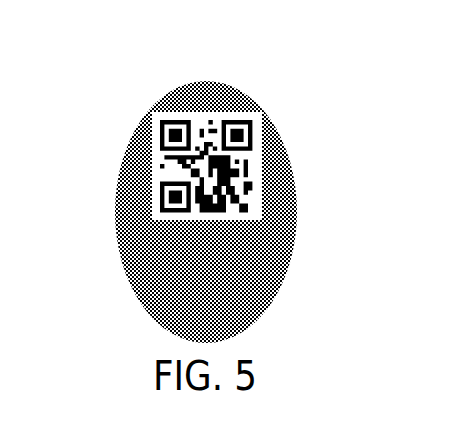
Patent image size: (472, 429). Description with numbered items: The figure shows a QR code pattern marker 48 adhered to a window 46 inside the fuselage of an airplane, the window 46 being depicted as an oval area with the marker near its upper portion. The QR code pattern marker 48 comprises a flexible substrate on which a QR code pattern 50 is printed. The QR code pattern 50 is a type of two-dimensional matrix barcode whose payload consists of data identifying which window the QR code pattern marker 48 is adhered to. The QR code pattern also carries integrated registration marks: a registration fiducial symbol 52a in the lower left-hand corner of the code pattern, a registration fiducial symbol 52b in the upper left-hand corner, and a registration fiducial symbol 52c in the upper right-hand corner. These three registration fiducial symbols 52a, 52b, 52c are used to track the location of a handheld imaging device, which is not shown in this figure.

The window 46 is at (290, 260).
The QR code pattern marker 48 is at (253, 200).
The QR code pattern 50 is at (265, 165).
The registration fiducial symbol 52a is at (162, 197).
The registration fiducial symbol 52b is at (162, 135).
The registration fiducial symbol 52c is at (237, 120).